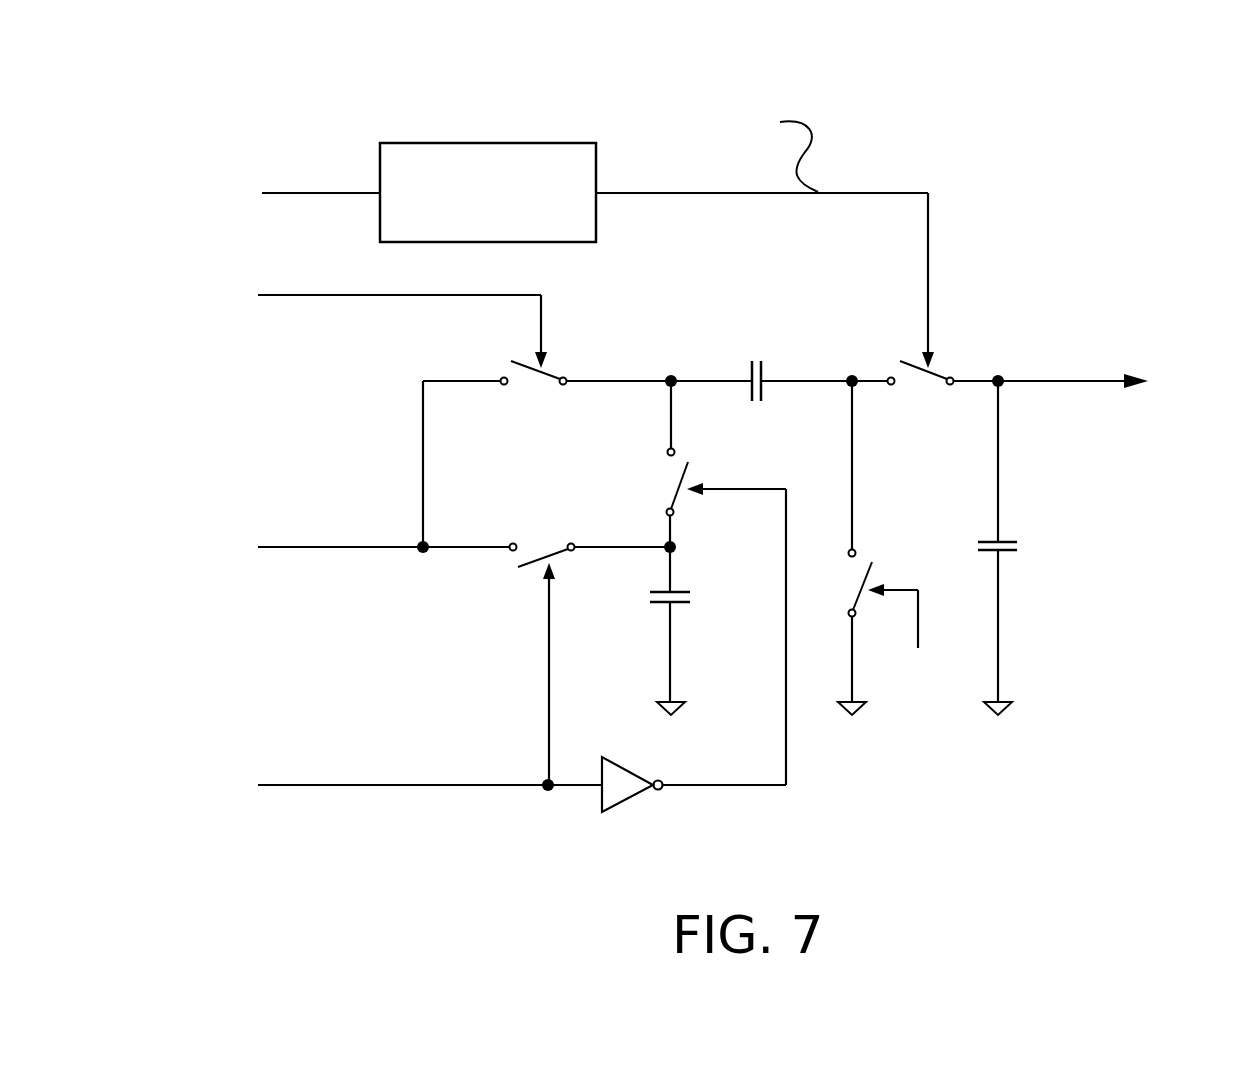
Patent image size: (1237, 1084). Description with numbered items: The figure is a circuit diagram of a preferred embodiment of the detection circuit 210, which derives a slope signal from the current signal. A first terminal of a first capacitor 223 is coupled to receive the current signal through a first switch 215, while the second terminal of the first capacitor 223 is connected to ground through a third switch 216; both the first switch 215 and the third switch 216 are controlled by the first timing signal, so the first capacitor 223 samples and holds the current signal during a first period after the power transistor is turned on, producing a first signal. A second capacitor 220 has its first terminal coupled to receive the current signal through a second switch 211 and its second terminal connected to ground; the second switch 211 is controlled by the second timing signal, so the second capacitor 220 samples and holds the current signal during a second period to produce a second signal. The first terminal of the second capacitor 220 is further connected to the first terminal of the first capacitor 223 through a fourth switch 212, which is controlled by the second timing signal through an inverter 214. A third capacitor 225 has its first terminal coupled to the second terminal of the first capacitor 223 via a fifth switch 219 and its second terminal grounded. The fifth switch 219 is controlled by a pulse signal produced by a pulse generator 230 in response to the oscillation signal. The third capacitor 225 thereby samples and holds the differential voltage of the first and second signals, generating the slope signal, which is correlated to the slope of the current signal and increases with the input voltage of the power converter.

The detection circuit 210 is at (1162, 79).
The second switch 211 is at (535, 560).
The fourth switch 212 is at (687, 463).
The inverter 214 is at (636, 776).
The first switch 215 is at (548, 373).
The third switch 216 is at (872, 565).
The fifth switch 219 is at (940, 373).
The second capacitor 220 is at (677, 585).
The first capacitor 223 is at (762, 365).
The third capacitor 225 is at (1000, 540).
The pulse generator 230 is at (596, 175).